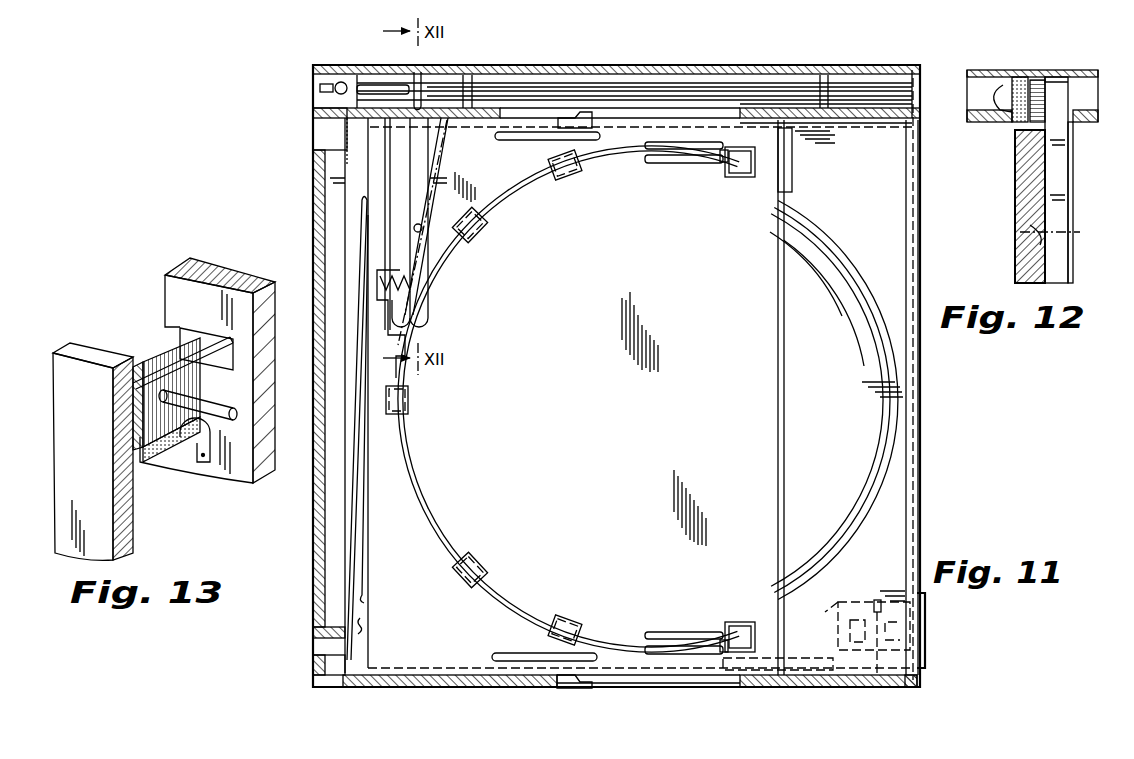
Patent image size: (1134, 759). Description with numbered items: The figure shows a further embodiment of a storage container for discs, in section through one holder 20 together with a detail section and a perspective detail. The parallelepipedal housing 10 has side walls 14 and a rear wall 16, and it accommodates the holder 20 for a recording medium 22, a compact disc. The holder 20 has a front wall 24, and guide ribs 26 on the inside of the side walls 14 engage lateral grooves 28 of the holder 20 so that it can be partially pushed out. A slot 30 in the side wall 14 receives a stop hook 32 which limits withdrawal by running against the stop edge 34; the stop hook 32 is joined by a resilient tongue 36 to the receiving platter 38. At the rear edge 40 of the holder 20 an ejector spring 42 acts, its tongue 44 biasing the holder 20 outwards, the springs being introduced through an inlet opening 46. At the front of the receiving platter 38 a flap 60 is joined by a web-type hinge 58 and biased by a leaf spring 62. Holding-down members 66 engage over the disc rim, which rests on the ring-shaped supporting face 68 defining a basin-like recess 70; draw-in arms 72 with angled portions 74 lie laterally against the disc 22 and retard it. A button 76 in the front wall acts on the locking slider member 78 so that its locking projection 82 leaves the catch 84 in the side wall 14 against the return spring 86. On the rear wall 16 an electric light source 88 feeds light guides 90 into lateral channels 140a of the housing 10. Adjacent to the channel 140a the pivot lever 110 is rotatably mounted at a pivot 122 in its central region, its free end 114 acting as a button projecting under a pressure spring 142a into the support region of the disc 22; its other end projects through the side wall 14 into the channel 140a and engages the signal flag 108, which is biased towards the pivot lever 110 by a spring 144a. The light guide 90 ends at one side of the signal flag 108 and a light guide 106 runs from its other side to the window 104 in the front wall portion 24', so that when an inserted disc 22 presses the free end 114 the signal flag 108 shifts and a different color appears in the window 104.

In FIG. 11, the housing 10 is at (360, 690).
In FIG. 11, the side wall 14 is at (838, 105).
In FIG. 12, the side wall 14 is at (1000, 112).
In FIG. 13, the side wall 14 is at (185, 270).
In FIG. 11, the rear wall 16 is at (313, 560).
In FIG. 11, the holder 20 is at (922, 394).
In FIG. 11, the recording medium 22 is at (435, 270).
In FIG. 11, the front wall 24 is at (936, 379).
In FIG. 11, the front wall portion 24' is at (935, 385).
In FIG. 11, the guide rib 26 is at (795, 135).
In FIG. 12, the guide rib 26 is at (1020, 160).
In FIG. 11, the lateral groove 28 is at (450, 686).
In FIG. 12, the lateral groove 28 is at (1030, 206).
In FIG. 11, the slot 30 is at (655, 95).
In FIG. 13, the slot 30 is at (170, 336).
In FIG. 11, the stop hook 32 is at (567, 112).
In FIG. 11, the stop edge 34 is at (745, 108).
In FIG. 11, the resilient tongue 36 is at (518, 141).
In FIG. 11, the receiving platter 38 is at (446, 629).
In FIG. 12, the receiving platter 38 is at (1018, 205).
In FIG. 11, the rear edge 40 is at (362, 622).
In FIG. 11, the ejector spring 42 is at (357, 520).
In FIG. 11, the tongue 44 is at (365, 577).
In FIG. 11, the inlet opening 46 is at (330, 135).
In FIG. 11, the web-type hinge 58 is at (786, 406).
In FIG. 11, the flap 60 is at (897, 440).
In FIG. 11, the leaf spring 62 is at (815, 671).
In FIG. 11, the holding-down member 66 is at (583, 178).
In FIG. 11, the supporting face 68 is at (422, 500).
In FIG. 11, the basin-like recess 70 is at (617, 366).
In FIG. 11, the draw-in arm 72 is at (650, 160).
In FIG. 11, the angled portion 74 is at (703, 162).
In FIG. 11, the button 76 is at (926, 630).
In FIG. 11, the locking slider member 78 is at (905, 686).
In FIG. 11, the locking projection 82 is at (885, 676).
In FIG. 11, the catch 84 is at (877, 680).
In FIG. 11, the return spring 86 is at (865, 602).
In FIG. 11, the electric light source 88 is at (340, 81).
In FIG. 11, the light guide 90 is at (372, 85).
In FIG. 13, the light guide 90 is at (215, 395).
In FIG. 11, the window 104 is at (914, 82).
In FIG. 11, the light guide 106 is at (715, 90).
In FIG. 12, the light guide 106 is at (1040, 80).
In FIG. 13, the light guide 106 is at (140, 375).
In FIG. 11, the signal flag 108 is at (425, 80).
In FIG. 12, the signal flag 108 is at (1048, 85).
In FIG. 13, the signal flag 108 is at (128, 410).
In FIG. 11, the pivot lever 110 is at (430, 190).
In FIG. 12, the pivot lever 110 is at (1062, 195).
In FIG. 13, the pivot lever 110 is at (190, 340).
In FIG. 11, the free end 114 is at (425, 320).
In FIG. 11, the pivot lever 122 is at (425, 232).
In FIG. 12, the pivot lever 122 is at (1018, 245).
In FIG. 11, the lateral channel 140a is at (615, 84).
In FIG. 12, the lateral channel 140a is at (1097, 110).
In FIG. 13, the lateral channel 140a is at (112, 346).
In FIG. 11, the pressure spring 142a is at (385, 280).
In FIG. 12, the spring 144a is at (1018, 80).
In FIG. 13, the spring 144a is at (195, 455).